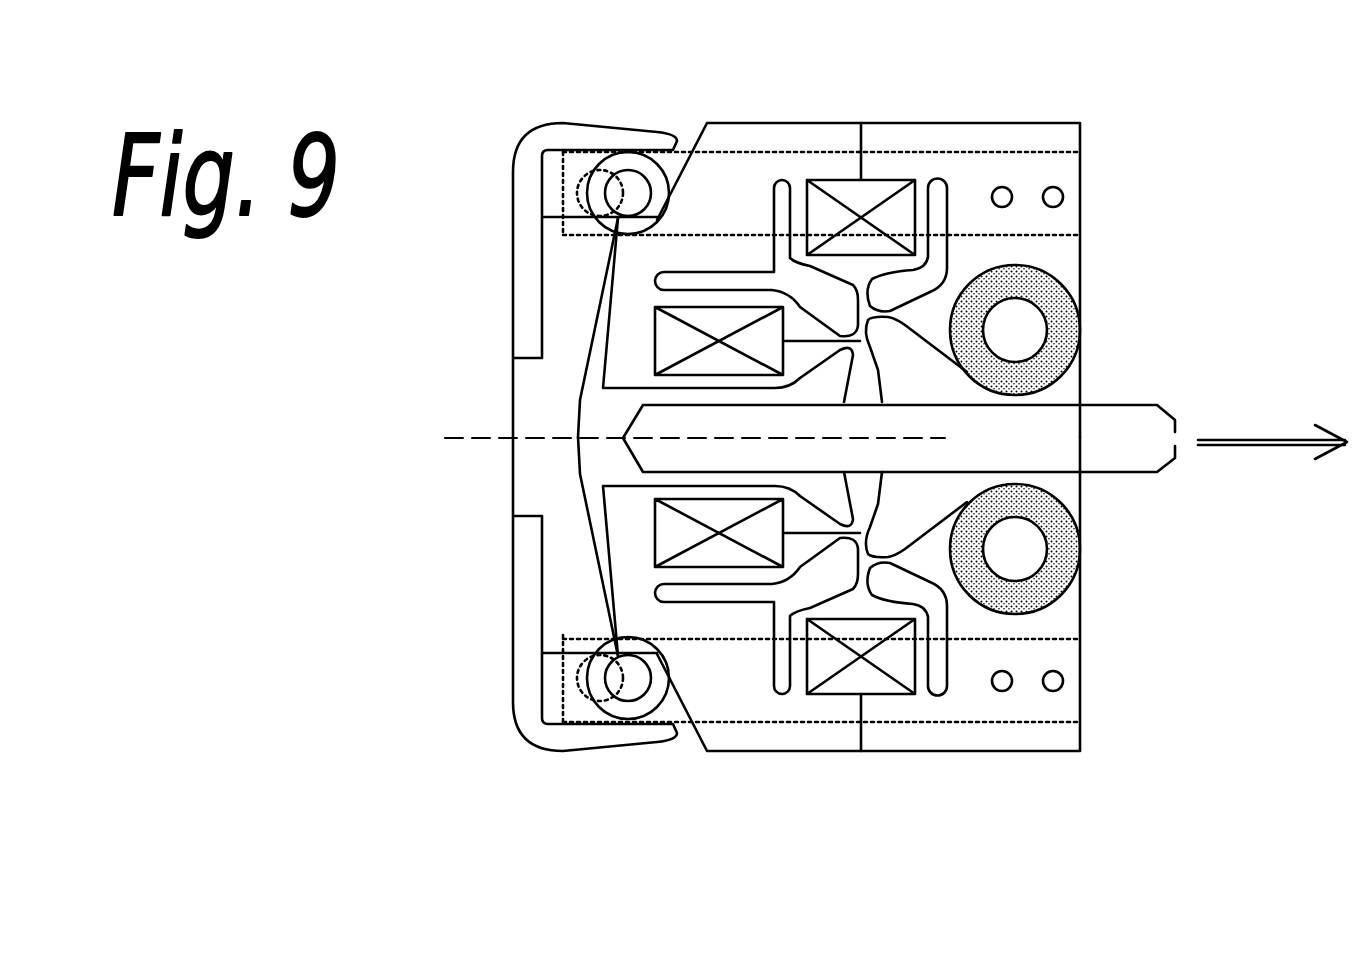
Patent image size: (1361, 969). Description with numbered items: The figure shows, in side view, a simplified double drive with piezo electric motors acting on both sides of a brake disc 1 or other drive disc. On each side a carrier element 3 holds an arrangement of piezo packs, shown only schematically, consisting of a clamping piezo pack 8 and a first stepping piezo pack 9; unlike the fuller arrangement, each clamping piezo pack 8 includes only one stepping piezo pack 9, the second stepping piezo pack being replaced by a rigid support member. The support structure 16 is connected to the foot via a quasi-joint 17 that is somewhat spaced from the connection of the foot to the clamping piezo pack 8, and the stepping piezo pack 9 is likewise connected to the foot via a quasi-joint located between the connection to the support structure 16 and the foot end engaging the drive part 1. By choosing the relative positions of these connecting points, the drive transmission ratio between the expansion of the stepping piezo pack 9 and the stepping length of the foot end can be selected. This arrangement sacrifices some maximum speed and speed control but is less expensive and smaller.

The brake disc 1 is at (1100, 430).
The carrier element 3 is at (1027, 175).
The clamping piezo pack 8 is at (895, 217).
The first stepping piezo pack 9 is at (748, 333).
The support structure 16 is at (943, 323).
The quasi-joint 17 is at (890, 310).